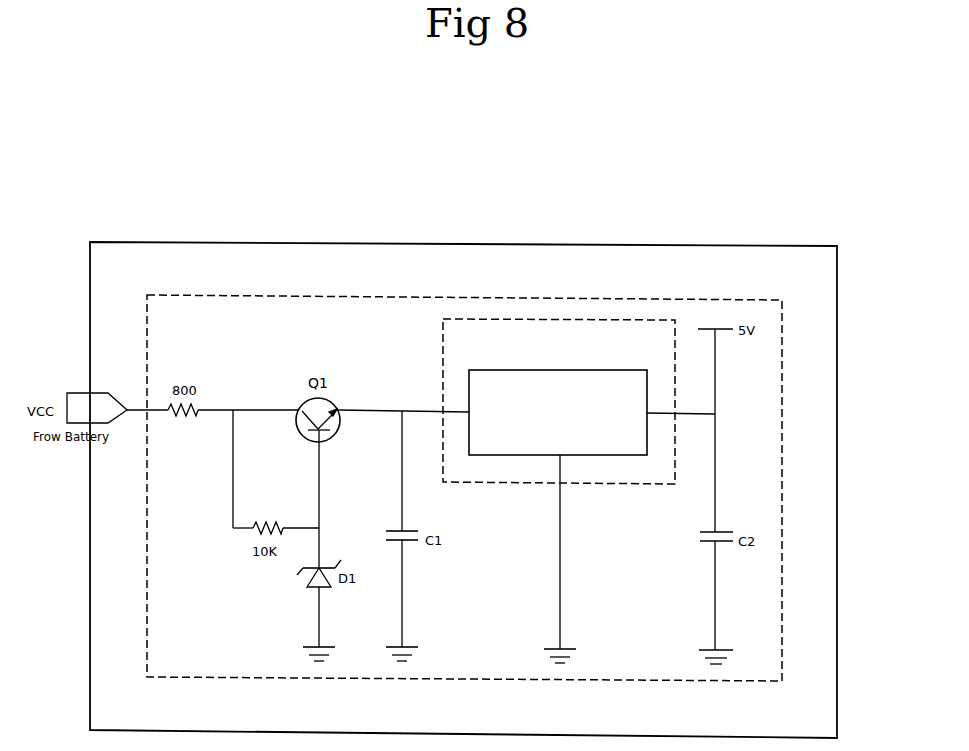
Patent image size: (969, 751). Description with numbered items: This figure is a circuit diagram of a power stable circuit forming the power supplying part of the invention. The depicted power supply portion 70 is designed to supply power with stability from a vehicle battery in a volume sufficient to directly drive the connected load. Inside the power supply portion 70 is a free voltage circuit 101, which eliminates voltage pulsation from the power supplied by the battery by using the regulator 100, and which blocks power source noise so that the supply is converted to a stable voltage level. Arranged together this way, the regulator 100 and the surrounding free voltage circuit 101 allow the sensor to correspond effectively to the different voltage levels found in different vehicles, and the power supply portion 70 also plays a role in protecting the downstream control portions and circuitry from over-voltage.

The power supply portion 70 is at (837, 518).
The regulator 100 is at (618, 483).
The free voltage circuit 101 is at (367, 677).